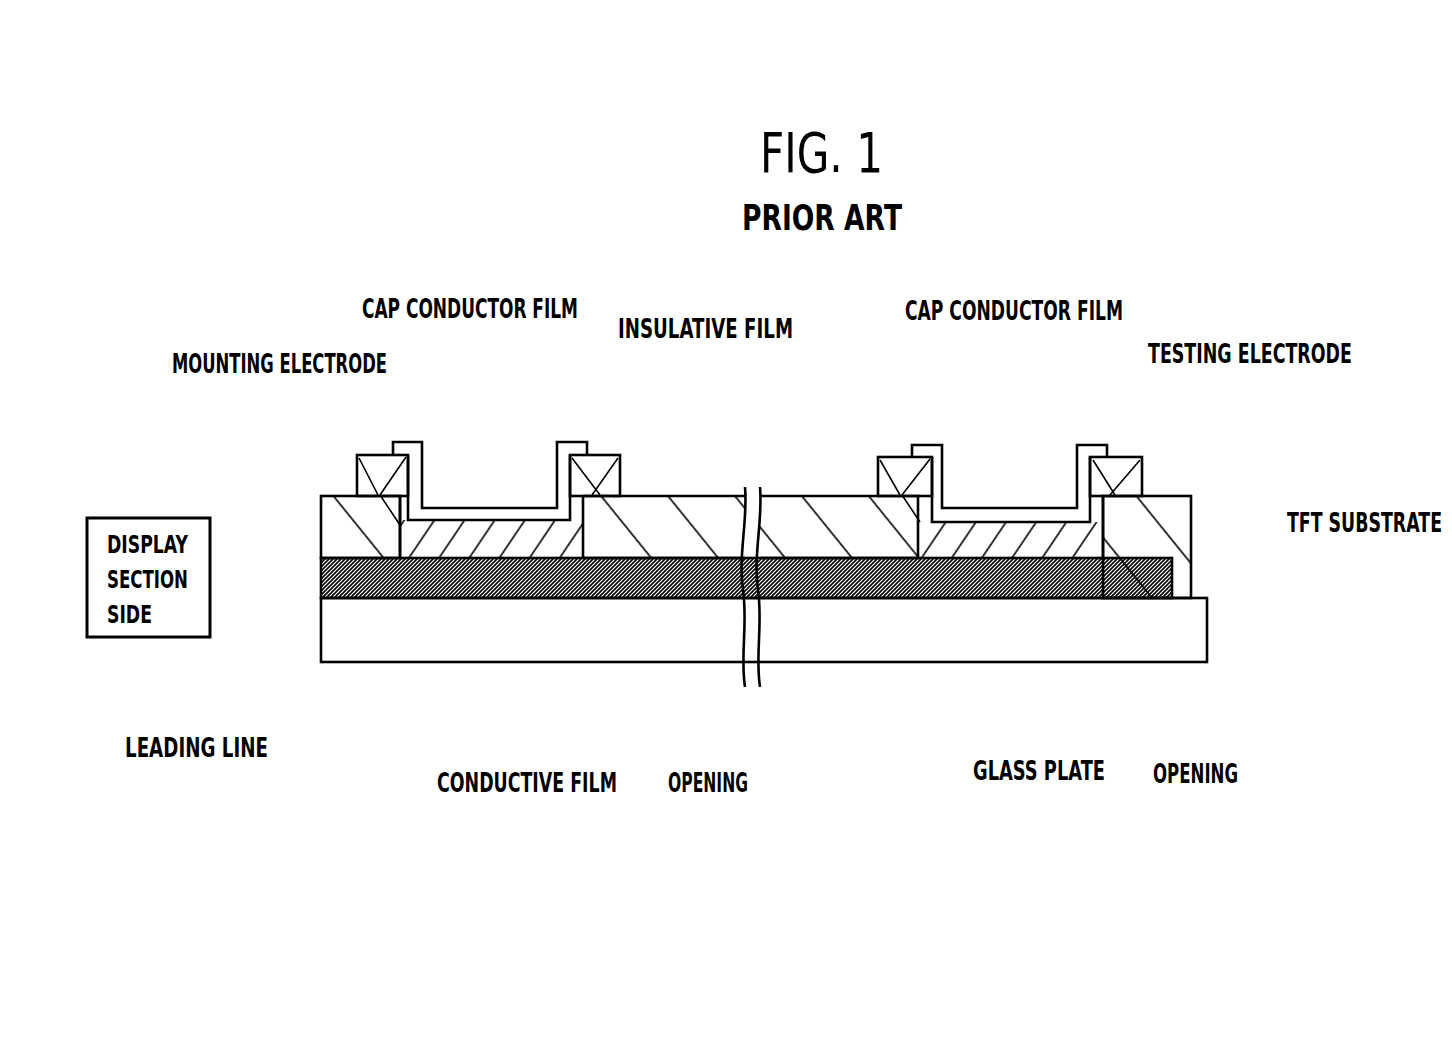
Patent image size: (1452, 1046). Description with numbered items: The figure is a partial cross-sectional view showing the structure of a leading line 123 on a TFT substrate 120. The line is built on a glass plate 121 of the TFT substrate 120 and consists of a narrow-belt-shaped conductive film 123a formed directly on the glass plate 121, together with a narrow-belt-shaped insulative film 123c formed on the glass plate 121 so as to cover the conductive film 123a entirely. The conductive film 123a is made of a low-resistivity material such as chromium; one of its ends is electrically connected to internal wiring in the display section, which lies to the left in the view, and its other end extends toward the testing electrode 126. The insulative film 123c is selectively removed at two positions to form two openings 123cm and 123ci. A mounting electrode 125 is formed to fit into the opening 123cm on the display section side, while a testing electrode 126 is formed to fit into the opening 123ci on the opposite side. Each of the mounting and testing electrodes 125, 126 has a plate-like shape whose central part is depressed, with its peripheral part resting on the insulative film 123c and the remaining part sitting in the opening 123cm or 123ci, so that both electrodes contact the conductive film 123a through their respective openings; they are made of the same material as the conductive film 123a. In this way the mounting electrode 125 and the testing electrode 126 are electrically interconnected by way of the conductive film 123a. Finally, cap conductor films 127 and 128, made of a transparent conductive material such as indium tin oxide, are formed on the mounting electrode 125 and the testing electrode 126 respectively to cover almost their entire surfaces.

The TFT substrate 120 is at (1255, 450).
The glass plate 121 is at (1028, 647).
The leading line 123 is at (307, 588).
The conductive film 123a is at (509, 598).
The insulative film 123c is at (333, 538).
The opening 123cm is at (590, 537).
The opening 123ci is at (1106, 540).
The mounting electrode 125 is at (357, 473).
The testing electrode 126 is at (1143, 475).
The cap conductor film 127 is at (407, 455).
The cap conductor film 128 is at (933, 457).